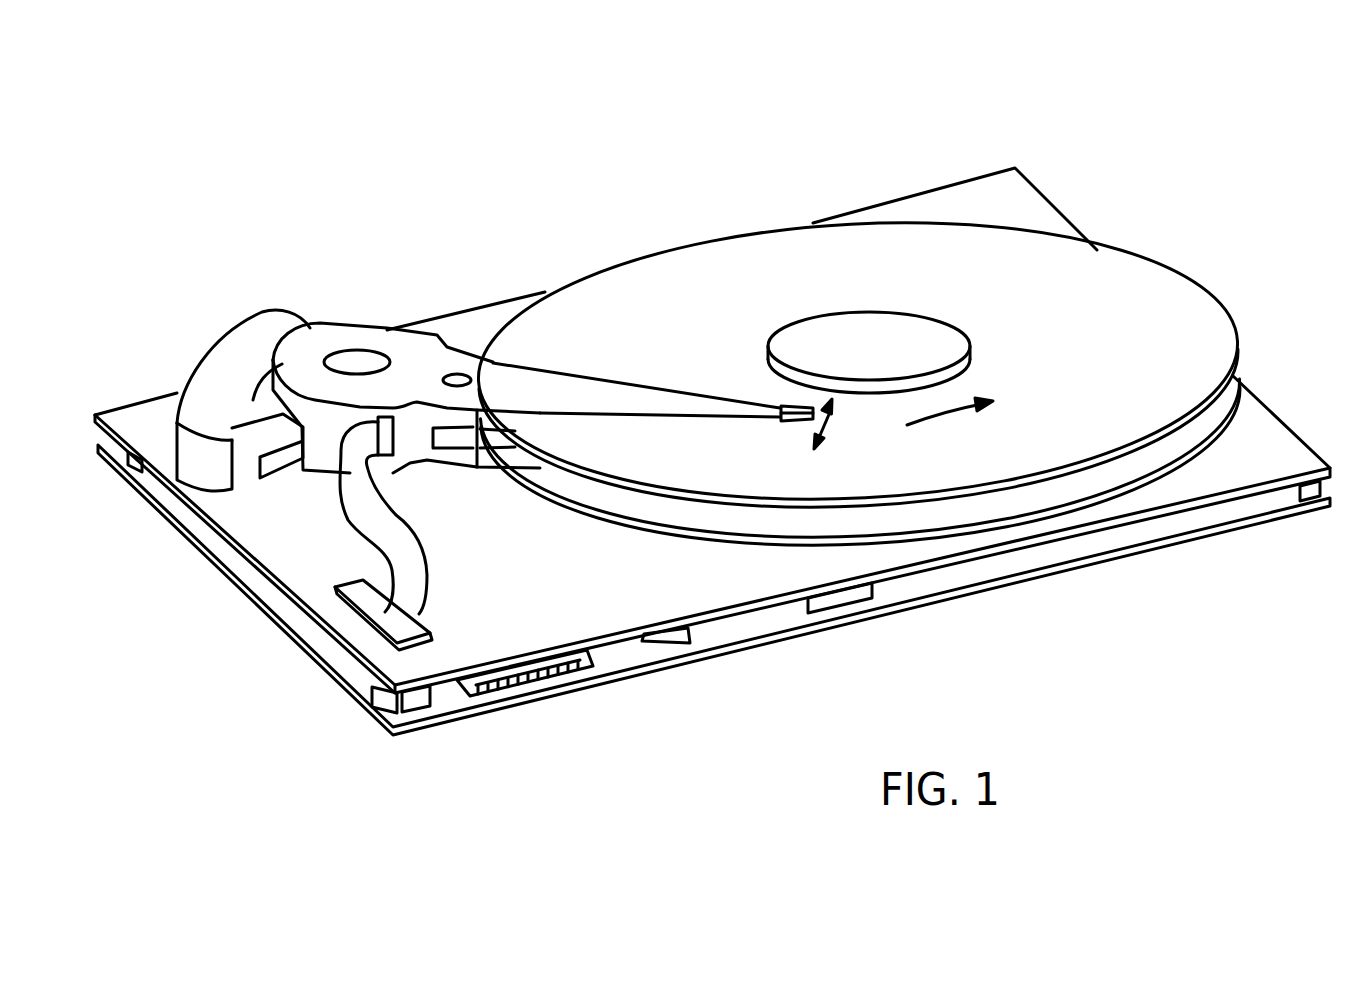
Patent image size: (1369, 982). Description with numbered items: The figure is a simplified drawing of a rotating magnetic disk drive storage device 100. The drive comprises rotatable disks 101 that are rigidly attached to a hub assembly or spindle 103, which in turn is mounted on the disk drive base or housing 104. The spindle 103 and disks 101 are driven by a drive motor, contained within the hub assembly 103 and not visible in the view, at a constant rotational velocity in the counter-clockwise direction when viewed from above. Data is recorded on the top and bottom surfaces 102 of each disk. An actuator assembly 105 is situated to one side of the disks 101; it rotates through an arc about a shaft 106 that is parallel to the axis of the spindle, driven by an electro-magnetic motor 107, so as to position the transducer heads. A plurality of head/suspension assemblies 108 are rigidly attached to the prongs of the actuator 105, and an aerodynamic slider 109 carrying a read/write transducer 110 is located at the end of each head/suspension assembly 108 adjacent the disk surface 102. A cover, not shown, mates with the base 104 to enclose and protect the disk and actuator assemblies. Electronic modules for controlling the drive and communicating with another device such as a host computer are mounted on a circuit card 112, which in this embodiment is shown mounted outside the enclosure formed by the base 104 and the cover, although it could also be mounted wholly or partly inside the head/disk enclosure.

The rotating magnetic disk drive storage device 100 is at (712, 405).
The rotatable disks 101 is at (1190, 431).
The disk surfaces 102 is at (814, 247).
The hub assembly or spindle 103 is at (906, 340).
The disk drive base or housing 104 is at (1266, 415).
The actuator assembly 105 is at (383, 326).
The shaft 106 is at (357, 360).
The electro-magnetic motor 107 is at (187, 387).
The head/suspension assembly 108 is at (541, 386).
The aerodynamic slider 109 is at (816, 423).
The read/write transducer 110 is at (824, 421).
The circuit card 112 is at (746, 650).